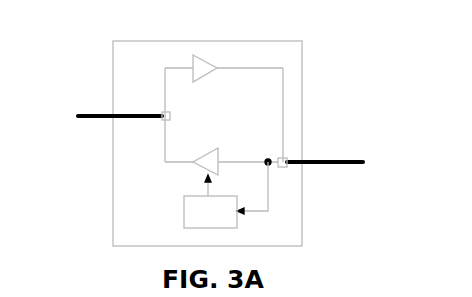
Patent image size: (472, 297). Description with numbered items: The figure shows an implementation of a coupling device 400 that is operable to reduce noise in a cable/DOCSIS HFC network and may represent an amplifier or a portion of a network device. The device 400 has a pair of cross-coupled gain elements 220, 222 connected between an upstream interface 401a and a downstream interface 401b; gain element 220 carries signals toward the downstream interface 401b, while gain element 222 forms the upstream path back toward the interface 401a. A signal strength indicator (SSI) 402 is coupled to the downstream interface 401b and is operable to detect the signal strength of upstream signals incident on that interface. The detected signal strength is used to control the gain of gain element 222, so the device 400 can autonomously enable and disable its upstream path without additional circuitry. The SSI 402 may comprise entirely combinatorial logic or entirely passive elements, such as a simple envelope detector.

The device 400 is at (278, 28).
The gain element 220 is at (197, 82).
The gain element 222 is at (211, 150).
The upstream interface 401a is at (162, 112).
The downstream interface 401b is at (287, 158).
The signal strength indicator (SSI) 402 is at (184, 212).